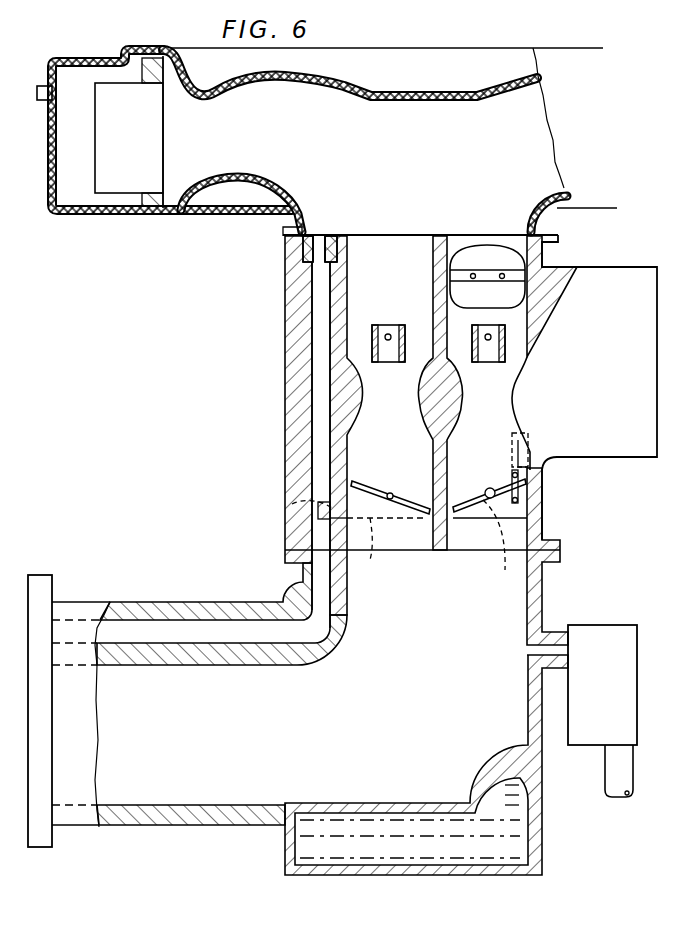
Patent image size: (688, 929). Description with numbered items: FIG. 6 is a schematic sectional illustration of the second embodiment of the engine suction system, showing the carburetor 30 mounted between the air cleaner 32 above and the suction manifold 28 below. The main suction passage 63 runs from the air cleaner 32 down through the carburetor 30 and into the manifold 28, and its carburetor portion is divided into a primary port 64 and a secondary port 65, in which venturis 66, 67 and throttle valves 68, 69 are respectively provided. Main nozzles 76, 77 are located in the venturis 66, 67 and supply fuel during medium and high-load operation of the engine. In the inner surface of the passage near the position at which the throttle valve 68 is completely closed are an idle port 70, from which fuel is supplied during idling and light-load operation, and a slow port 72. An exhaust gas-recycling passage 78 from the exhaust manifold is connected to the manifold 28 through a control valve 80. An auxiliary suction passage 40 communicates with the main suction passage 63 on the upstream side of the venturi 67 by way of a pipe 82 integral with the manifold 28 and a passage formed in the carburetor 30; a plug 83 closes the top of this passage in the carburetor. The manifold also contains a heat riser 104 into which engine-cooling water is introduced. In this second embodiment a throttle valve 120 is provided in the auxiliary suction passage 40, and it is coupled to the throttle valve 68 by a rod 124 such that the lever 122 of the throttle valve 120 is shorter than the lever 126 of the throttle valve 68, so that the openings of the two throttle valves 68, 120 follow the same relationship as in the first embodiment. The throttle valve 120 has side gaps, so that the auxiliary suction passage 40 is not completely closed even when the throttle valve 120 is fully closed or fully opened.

The manifold 28 is at (193, 817).
The carburetor 30 is at (578, 256).
The air cleaner 32 is at (486, 63).
The auxiliary suction passage 40 is at (322, 298).
The main suction passage 63 is at (406, 198).
The primary port 64 is at (465, 438).
The secondary port 65 is at (365, 451).
The venturi 66 is at (477, 353).
The venturi 67 is at (375, 355).
The throttle valve 68 is at (465, 510).
The throttle valve 69 is at (418, 512).
The idle port 70 is at (518, 501).
The slow port 72 is at (530, 480).
The main nozzle 76 is at (490, 332).
The main nozzle 77 is at (391, 333).
The exhaust gas-recycling passage 78 is at (612, 780).
The control valve 80 is at (608, 633).
The pipe 82 is at (218, 633).
The plug 83 is at (333, 234).
The heat riser 104 is at (390, 851).
The throttle valve 120 is at (332, 502).
The lever 122 is at (292, 504).
The rod 124 is at (370, 556).
The lever 126 is at (503, 556).